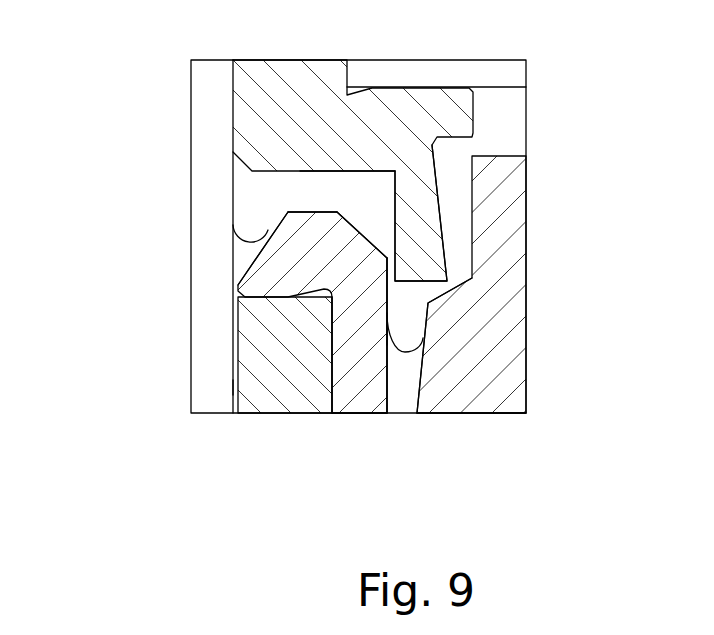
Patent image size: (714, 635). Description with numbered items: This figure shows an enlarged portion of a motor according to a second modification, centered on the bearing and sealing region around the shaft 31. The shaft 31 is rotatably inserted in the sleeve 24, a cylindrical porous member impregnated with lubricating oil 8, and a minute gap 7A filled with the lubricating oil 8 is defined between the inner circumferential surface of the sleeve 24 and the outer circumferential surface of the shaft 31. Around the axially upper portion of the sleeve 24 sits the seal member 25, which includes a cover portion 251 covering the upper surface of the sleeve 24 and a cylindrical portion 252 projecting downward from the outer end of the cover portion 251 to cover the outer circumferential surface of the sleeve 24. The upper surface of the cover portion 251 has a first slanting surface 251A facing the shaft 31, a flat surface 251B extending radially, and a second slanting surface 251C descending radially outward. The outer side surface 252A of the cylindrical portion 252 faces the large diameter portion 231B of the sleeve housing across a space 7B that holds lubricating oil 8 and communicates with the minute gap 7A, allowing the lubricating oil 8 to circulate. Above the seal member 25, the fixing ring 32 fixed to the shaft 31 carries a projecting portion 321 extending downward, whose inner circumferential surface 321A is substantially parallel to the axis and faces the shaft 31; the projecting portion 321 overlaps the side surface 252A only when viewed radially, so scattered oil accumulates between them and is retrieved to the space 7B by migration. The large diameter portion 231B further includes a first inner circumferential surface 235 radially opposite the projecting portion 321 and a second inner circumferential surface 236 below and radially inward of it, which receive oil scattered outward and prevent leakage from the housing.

The shaft 31 is at (200, 60).
The fixing ring 32 is at (252, 60).
The projecting portion 321 is at (423, 230).
The inner circumferential surface 321A is at (374, 171).
The first inner circumferential surface 235 is at (478, 238).
The second inner circumferential surface 236 is at (425, 362).
The large diameter portion 231B is at (513, 413).
The seal member 25 is at (287, 455).
The cover portion 251 is at (300, 283).
The first slanting surface 251A is at (272, 229).
The flat surface 251B is at (303, 210).
The second slanting surface 251C is at (356, 230).
The cylindrical portion 252 is at (355, 395).
The side surface 252A is at (403, 352).
The sleeve 24 is at (260, 414).
The lubricating oil 8 is at (242, 255).
The minute gap 7A is at (229, 387).
The space 7B is at (414, 332).